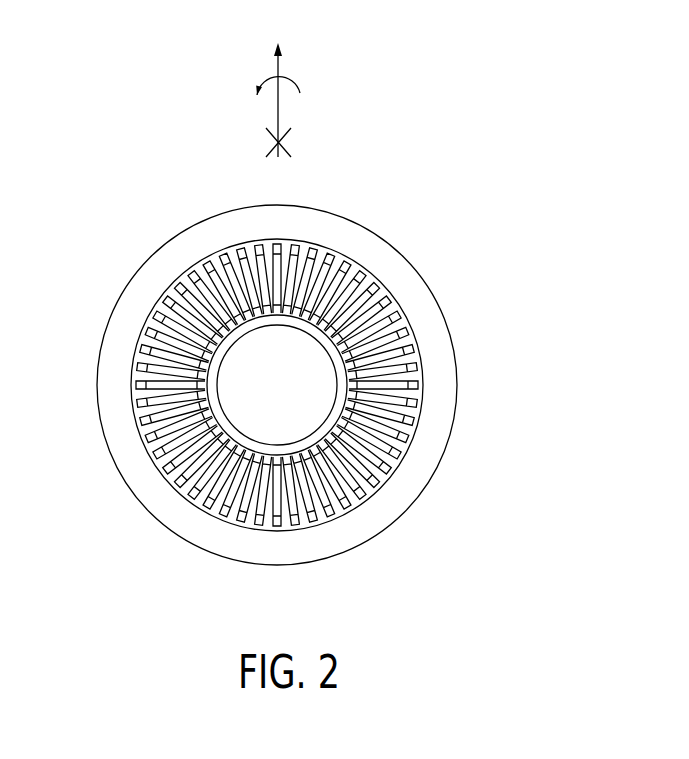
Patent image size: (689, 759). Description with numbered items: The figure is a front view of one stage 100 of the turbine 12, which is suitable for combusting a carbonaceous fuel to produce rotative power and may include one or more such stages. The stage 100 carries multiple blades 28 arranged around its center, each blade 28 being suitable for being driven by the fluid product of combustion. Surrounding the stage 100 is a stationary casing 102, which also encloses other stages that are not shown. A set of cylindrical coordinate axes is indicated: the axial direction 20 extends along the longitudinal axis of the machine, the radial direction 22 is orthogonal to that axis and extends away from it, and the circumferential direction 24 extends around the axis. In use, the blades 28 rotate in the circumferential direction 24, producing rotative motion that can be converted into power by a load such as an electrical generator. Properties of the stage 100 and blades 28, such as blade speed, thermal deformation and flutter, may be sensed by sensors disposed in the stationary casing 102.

The turbine 12 is at (294, 363).
The axial direction 20 is at (274, 146).
The radial direction 22 is at (280, 63).
The circumferential direction 24 is at (268, 82).
The turbine blades 28 is at (178, 288).
The stage 100 is at (410, 315).
The stationary casing 102 is at (443, 384).